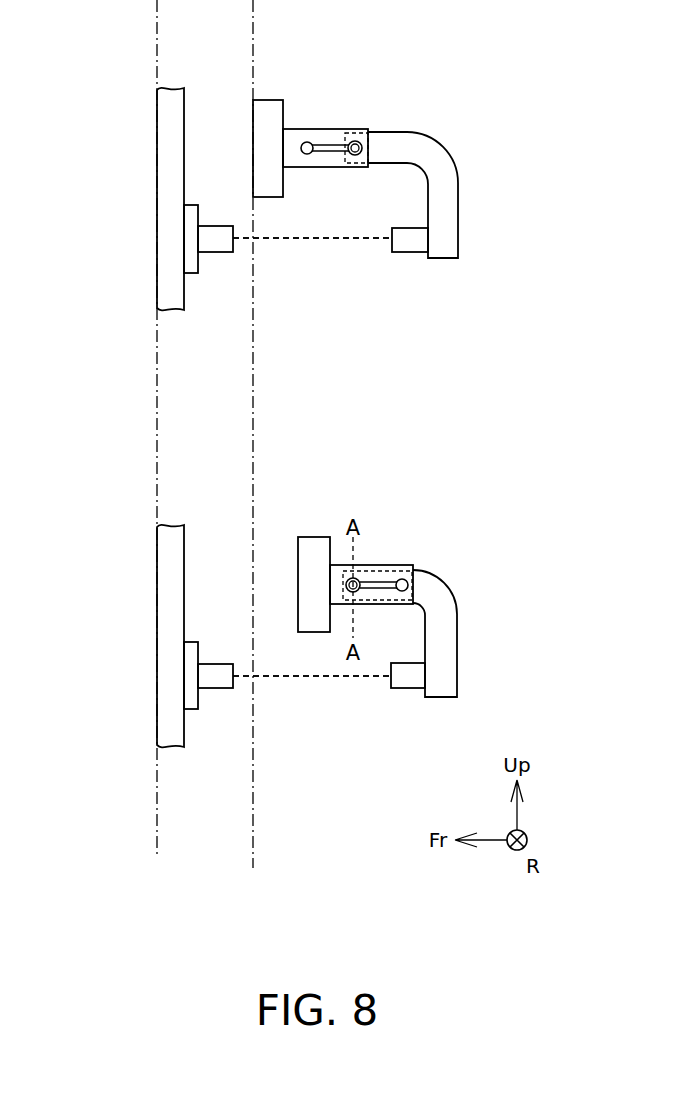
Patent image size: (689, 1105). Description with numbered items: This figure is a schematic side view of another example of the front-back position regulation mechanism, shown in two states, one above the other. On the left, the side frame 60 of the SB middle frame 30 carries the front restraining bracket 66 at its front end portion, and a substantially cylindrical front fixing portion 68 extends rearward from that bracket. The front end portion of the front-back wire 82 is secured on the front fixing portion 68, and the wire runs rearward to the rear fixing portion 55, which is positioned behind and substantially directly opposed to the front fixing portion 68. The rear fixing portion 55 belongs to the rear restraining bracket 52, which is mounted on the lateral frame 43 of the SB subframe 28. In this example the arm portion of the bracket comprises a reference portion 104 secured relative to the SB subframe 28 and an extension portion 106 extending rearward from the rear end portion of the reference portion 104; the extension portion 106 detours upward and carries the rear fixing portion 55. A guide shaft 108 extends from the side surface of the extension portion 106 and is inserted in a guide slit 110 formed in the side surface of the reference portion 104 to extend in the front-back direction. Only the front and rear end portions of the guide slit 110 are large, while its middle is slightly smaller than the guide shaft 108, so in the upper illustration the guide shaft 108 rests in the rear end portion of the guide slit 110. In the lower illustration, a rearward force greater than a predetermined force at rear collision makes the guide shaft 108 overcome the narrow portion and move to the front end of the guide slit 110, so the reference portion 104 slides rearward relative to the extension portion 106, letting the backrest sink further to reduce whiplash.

The SB subframe 28 is at (268, 100).
The SB middle frame 30 is at (165, 124).
The lateral frame 43 is at (327, 321).
The rear restraining bracket 52 is at (452, 366).
The rear fixing portion 55 is at (408, 252).
The side frame 60 is at (118, 417).
The front restraining bracket 66 is at (190, 242).
The front fixing portion 68 is at (214, 250).
The front-back wire 82 is at (361, 240).
The reference portion 104 is at (330, 129).
The extension portion 106 is at (455, 163).
The guide shaft 108 is at (355, 157).
The guide slit 110 is at (307, 155).